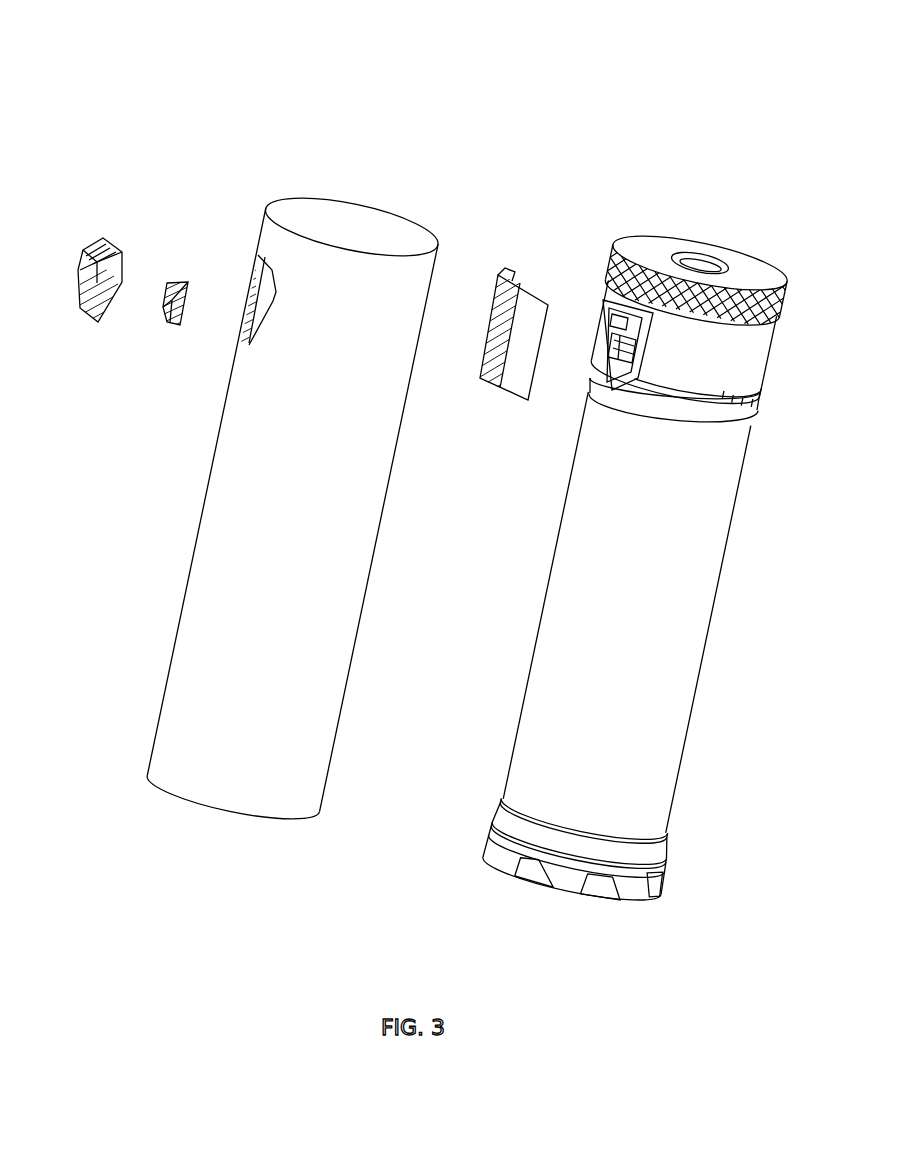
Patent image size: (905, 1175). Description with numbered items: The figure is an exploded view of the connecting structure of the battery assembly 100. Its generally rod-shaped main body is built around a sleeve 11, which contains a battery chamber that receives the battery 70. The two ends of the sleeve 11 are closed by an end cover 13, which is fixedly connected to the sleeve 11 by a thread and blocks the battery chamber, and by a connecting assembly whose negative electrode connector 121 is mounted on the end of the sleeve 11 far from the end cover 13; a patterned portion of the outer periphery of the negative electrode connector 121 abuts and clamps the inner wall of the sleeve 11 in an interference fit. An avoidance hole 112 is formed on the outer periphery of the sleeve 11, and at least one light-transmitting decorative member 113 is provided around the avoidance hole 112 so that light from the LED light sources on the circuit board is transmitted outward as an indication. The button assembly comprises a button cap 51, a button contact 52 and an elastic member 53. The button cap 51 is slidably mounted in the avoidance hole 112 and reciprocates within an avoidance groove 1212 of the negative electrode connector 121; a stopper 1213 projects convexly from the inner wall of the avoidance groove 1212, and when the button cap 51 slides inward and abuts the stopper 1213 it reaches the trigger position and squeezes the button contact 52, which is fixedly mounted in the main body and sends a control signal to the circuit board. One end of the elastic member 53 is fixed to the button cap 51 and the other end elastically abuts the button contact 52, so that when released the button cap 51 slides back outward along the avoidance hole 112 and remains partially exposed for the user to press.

The battery assembly 100 is at (377, 31).
The sleeve 11 is at (330, 278).
The avoidance hole 112 is at (264, 301).
The light-transmitting decorative member 113 is at (517, 277).
The negative electrode connector 121 is at (650, 248).
The avoidance groove 1212 is at (613, 322).
The stopper 1213 is at (608, 312).
The end cover 13 is at (490, 852).
The button cap 51 is at (122, 243).
The button contact 52 is at (607, 350).
The elastic member 53 is at (188, 283).
The battery 70 is at (563, 641).